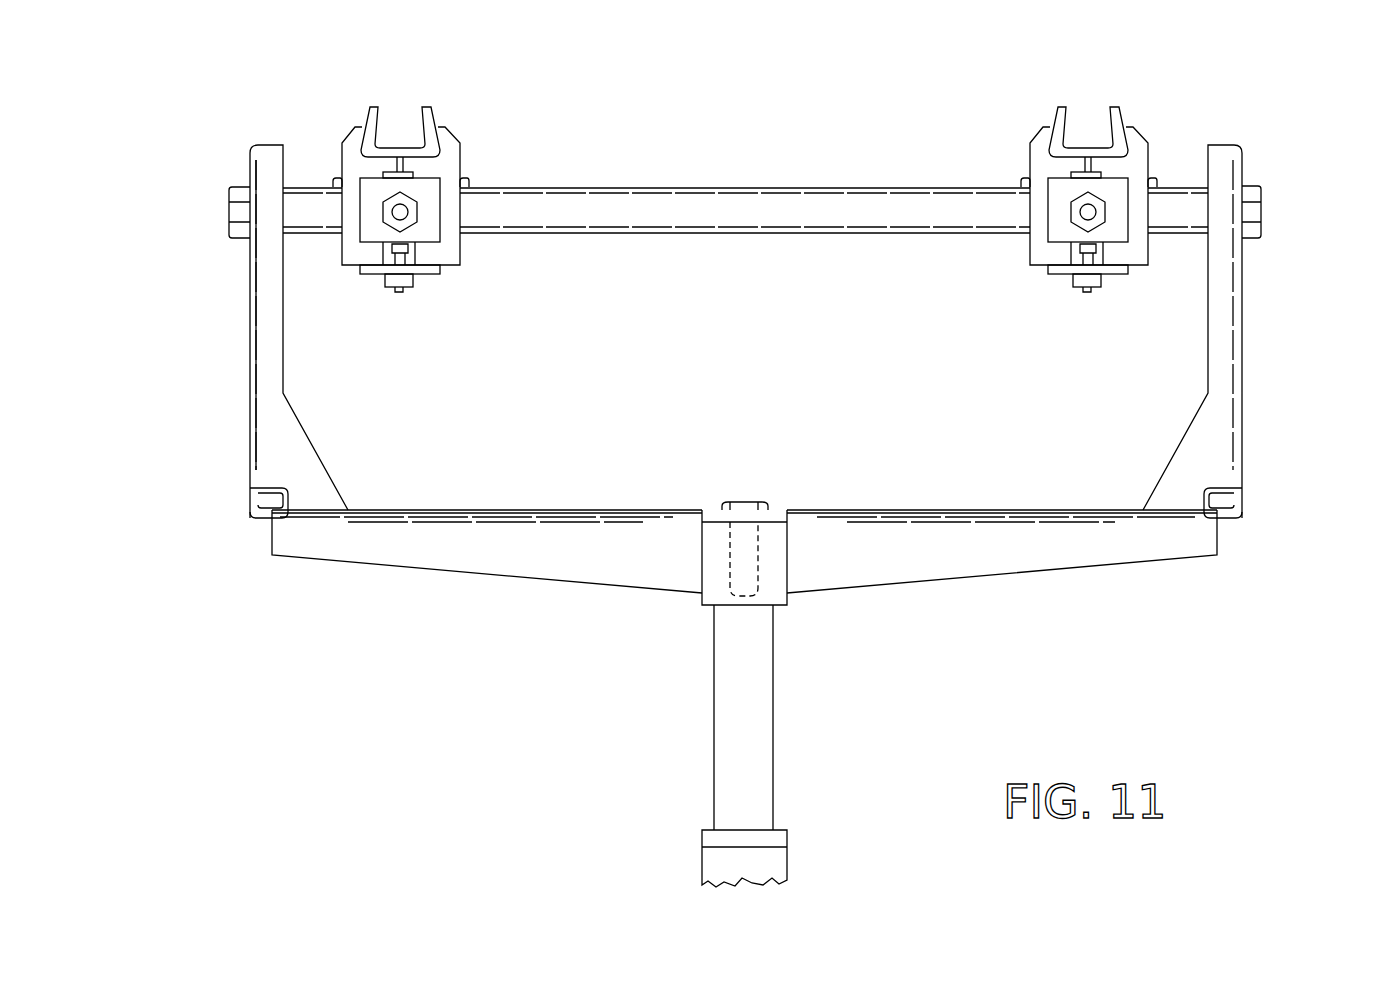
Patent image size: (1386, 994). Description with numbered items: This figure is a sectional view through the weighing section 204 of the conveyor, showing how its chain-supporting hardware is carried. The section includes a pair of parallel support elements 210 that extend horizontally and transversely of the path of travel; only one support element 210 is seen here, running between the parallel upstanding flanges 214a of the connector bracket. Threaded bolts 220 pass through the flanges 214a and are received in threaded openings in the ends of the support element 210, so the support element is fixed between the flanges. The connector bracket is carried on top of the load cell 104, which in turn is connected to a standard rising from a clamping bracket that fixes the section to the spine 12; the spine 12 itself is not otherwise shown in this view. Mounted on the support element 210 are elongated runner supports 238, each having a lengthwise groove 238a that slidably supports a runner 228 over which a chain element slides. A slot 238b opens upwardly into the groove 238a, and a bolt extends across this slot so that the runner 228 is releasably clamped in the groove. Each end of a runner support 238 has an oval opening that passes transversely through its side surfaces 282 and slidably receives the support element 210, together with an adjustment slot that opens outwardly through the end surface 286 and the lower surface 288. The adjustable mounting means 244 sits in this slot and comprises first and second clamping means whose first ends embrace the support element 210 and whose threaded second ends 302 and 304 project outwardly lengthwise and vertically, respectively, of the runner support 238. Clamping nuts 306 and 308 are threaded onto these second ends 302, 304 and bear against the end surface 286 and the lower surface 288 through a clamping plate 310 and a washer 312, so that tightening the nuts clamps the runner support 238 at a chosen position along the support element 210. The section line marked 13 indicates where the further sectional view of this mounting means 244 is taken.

The spine 12 is at (343, 302).
The section line 13- 13 is at (432, 342).
The load cell 104 is at (773, 686).
The weighing section 204 is at (507, 685).
The support element 210 is at (688, 188).
The upstanding flange 214a is at (250, 400).
The threaded bolt 220 is at (231, 212).
The runner 228 is at (437, 117).
The runner support 238 is at (462, 258).
The groove 238a is at (1108, 138).
The slot 238b is at (428, 158).
The adjustable mounting means 244 is at (380, 292).
The side surface 282 is at (1030, 140).
The end surface 286 is at (455, 246).
The lower surface 288 is at (447, 273).
The threaded second end 302 is at (418, 211).
The threaded second end 304 is at (414, 290).
The clamping nut 306 is at (420, 200).
The clamping nut 308 is at (406, 290).
The clamping plate 310 is at (410, 172).
The washer 312 is at (414, 284).